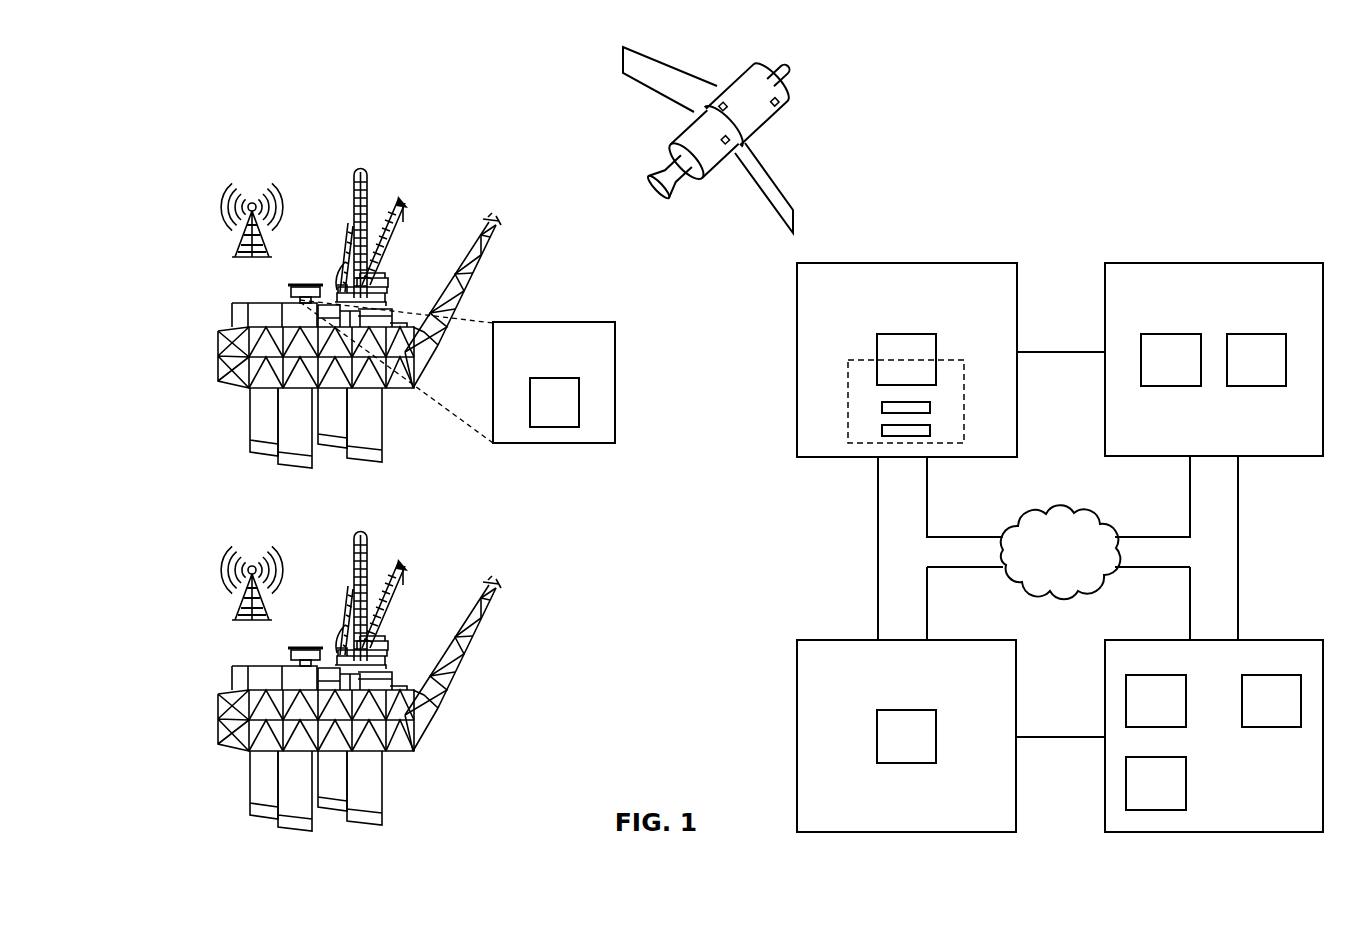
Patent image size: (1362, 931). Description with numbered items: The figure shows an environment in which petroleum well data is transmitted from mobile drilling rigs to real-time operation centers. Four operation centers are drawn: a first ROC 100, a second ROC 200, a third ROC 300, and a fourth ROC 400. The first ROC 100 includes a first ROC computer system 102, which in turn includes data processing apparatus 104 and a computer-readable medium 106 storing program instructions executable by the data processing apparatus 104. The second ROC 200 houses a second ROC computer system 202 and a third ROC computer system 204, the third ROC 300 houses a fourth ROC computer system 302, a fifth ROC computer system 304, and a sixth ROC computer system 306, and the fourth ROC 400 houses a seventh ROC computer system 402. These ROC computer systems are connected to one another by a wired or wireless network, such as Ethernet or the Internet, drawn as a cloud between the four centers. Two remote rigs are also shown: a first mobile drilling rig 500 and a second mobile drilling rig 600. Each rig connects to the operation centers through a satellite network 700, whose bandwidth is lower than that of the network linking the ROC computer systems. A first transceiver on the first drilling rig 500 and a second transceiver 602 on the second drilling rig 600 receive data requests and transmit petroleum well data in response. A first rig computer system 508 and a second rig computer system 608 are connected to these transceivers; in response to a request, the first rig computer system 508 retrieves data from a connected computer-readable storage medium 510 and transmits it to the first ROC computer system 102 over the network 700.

The first ROC 100 is at (887, 302).
The first ROC computer system 102 is at (887, 372).
The data processing apparatus 104 is at (931, 408).
The computer-readable medium 106 is at (931, 431).
The second ROC 200 is at (1193, 302).
The second ROC computer system 202 is at (1151, 372).
The third ROC computer system 204 is at (1237, 372).
The third ROC 300 is at (1193, 669).
The fourth ROC computer system 302 is at (1136, 713).
The fifth ROC computer system 304 is at (1252, 713).
The sixth ROC computer system 306 is at (1136, 796).
The fourth ROC 400 is at (887, 669).
The seventh ROC computer system 402 is at (887, 749).
The first mobile drilling rig 500 is at (231, 154).
The first rig computer system 508 is at (288, 298).
The computer-readable storage medium 510 is at (535, 356).
The second mobile drilling rig 600 is at (327, 667).
The second transceiver 602 is at (223, 583).
The second rig computer system 608 is at (267, 650).
The network 700 is at (810, 81).